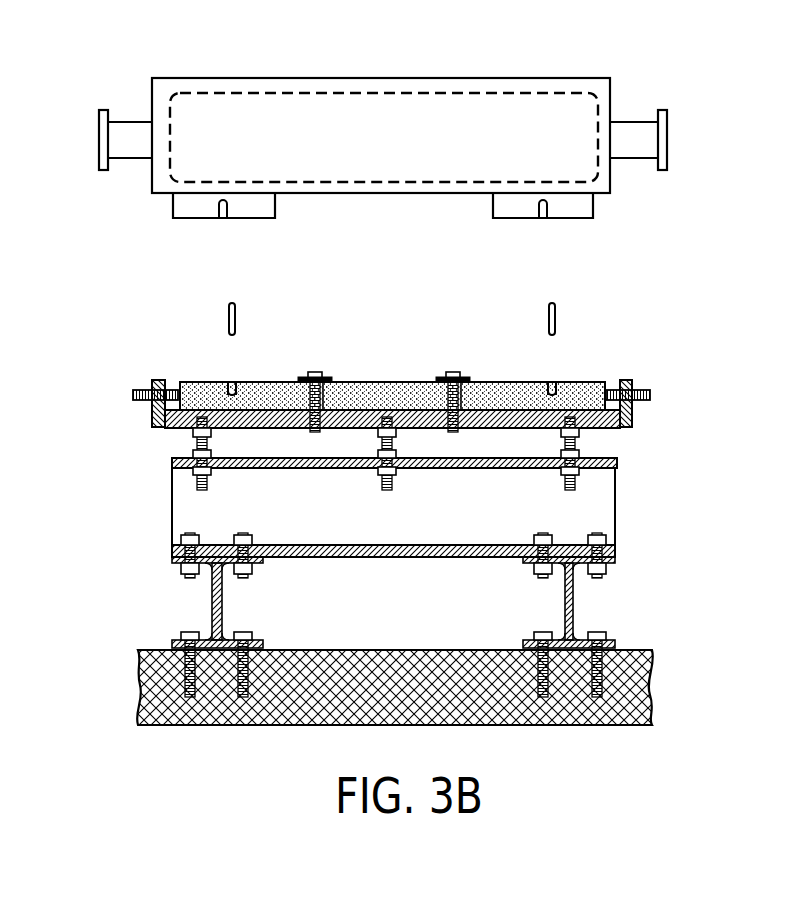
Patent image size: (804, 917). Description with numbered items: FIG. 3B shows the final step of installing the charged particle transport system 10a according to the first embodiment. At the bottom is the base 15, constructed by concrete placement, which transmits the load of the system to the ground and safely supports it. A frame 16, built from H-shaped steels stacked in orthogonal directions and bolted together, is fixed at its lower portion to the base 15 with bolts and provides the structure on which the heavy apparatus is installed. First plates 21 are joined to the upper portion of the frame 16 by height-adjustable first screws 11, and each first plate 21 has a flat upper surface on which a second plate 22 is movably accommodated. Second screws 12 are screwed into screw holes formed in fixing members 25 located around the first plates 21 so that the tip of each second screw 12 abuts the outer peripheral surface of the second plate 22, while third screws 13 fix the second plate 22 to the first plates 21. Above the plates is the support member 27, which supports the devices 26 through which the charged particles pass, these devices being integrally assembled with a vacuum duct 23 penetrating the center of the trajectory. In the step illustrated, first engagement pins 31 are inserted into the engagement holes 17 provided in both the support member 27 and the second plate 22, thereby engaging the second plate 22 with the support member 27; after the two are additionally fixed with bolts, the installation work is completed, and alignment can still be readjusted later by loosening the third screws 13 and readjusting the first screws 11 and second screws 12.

The charged particle transport system 10a is at (159, 43).
The device 26 is at (284, 92).
The support member 27 is at (507, 78).
The vacuum duct 23 is at (99, 138).
The engagement hole 17 is at (223, 218).
The first engagement pin 31 is at (226, 318).
The second screw 12 is at (154, 382).
The third screw 13 is at (314, 372).
The fixing member 25 is at (153, 412).
The frame 16 is at (172, 520).
The first screw 11 is at (210, 486).
The first plate 21 is at (270, 418).
The second plate 22 is at (344, 398).
The base 15 is at (403, 650).